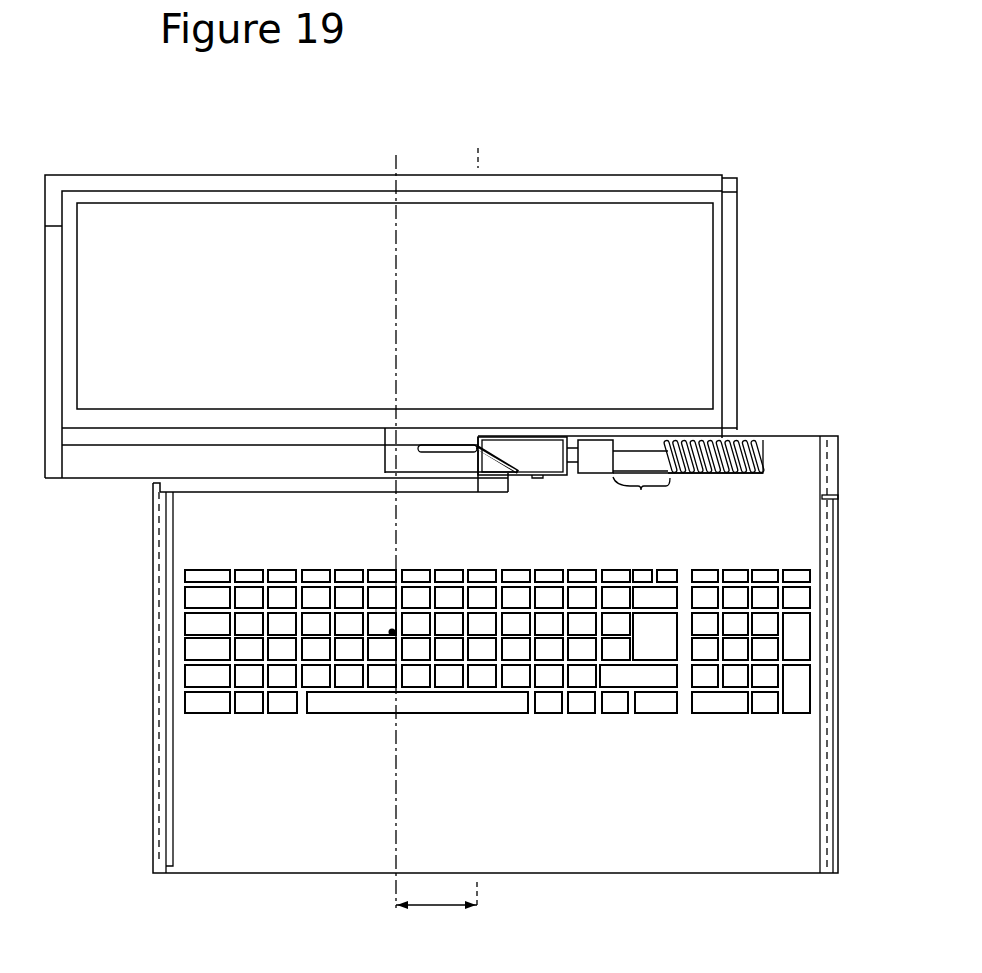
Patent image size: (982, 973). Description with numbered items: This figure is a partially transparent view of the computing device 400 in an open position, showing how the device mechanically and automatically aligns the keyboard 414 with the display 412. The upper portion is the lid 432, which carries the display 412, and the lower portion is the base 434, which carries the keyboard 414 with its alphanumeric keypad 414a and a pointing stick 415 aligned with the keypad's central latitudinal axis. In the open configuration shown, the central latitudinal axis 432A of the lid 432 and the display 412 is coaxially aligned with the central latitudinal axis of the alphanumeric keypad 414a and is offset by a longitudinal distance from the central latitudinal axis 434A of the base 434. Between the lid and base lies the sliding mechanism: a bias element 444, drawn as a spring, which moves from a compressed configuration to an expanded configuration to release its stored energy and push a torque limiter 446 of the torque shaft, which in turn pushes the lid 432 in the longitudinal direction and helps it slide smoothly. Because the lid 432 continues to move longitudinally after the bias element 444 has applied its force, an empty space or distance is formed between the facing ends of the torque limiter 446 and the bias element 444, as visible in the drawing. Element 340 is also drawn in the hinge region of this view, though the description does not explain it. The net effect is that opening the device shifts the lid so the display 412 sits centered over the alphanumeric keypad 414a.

The computing device 400 is at (668, 160).
The display 412 is at (688, 284).
The lid 432 is at (55, 480).
The central latitudinal axis of the lid 432A is at (372, 520).
The base 434 is at (152, 623).
The central latitudinal axis of the base 434A is at (496, 515).
The hinge link 340 is at (483, 458).
The bias element 444 is at (743, 442).
The torque limiter 446 is at (586, 466).
The keyboard 414 is at (280, 722).
The alphanumeric keypad 414a is at (686, 715).
The pointing stick 415 is at (392, 636).